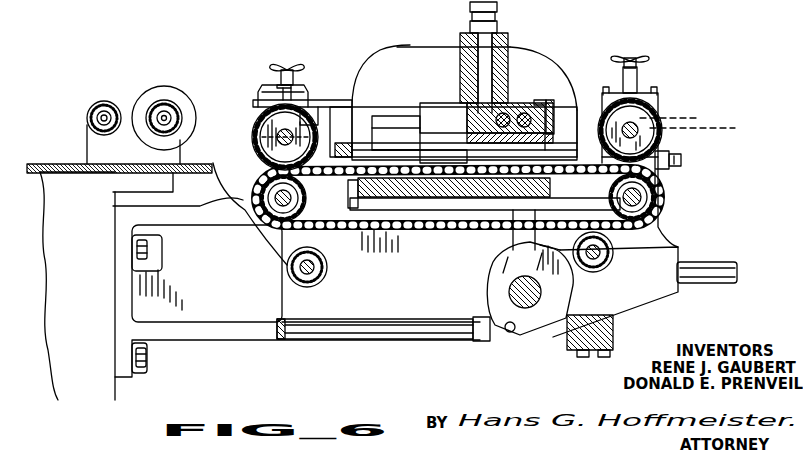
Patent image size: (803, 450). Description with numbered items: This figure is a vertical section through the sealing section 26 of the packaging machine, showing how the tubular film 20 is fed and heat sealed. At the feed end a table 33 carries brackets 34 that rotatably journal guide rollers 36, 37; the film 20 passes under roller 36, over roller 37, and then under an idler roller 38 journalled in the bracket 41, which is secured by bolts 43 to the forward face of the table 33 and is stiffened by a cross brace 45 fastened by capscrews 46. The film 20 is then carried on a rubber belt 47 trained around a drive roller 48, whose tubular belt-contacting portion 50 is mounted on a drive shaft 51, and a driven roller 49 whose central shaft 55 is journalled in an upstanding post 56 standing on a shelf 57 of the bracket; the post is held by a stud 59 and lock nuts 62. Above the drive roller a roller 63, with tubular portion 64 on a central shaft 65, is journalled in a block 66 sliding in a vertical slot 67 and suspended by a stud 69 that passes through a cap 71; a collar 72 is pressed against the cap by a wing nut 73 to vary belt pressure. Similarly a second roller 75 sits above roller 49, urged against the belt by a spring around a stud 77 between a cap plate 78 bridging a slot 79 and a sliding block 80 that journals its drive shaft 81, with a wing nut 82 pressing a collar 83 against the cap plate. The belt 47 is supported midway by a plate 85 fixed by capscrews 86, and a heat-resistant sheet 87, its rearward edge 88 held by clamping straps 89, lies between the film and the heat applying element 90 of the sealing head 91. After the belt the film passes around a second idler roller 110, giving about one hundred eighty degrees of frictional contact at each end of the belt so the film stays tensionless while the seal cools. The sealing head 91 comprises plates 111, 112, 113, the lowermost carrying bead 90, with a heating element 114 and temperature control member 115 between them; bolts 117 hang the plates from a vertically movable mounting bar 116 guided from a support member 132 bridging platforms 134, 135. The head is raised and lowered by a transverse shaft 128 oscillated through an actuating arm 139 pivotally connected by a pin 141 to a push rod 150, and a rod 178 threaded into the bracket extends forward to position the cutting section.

The tubular film 20 is at (82, 130).
The sealing section 26 is at (554, 58).
The table 33 is at (63, 163).
The brackets 34 is at (123, 147).
The guide roller 36 is at (104, 100).
The guide roller 37 is at (172, 105).
The idler roller 38 is at (327, 273).
The bracket 41 is at (224, 292).
The bolts 43 is at (148, 250).
The cross brace 45 is at (604, 326).
The capscrews 46 is at (602, 357).
The rubber belt 47 is at (460, 230).
The drive roller 48 is at (258, 229).
The driven roller 49 is at (658, 200).
The tubular belt-contacting portion 50 is at (306, 198).
The drive shaft 51 is at (316, 197).
The central shaft 55 is at (585, 214).
The post 56 is at (661, 106).
The shelf 57 is at (665, 243).
The stud 59 is at (682, 162).
The lock nuts 62 is at (692, 183).
The roller 63 is at (262, 112).
The tubular belt-contacting portion 64 is at (258, 133).
The central shaft 65 is at (260, 148).
The block 66 is at (300, 116).
The vertical slot 67 is at (333, 90).
The stud 69 is at (287, 66).
The cap 71 is at (265, 90).
The collar 72 is at (264, 73).
The wing nut 73 is at (298, 67).
The second roller 75 is at (662, 139).
The stud 77 is at (630, 56).
The cap plate 78 is at (612, 94).
The slot 79 is at (680, 121).
The sliding block 80 is at (703, 129).
The drive shaft 81 is at (548, 107).
The wing nut 82 is at (650, 61).
The collar 83 is at (640, 76).
The plate 85 is at (482, 188).
The capscrews 86 is at (383, 156).
The sheet 87 is at (462, 144).
The rearward edge 88 is at (350, 114).
The clamping straps 89 is at (366, 126).
The heat applying element 90 is at (553, 145).
The sealing head 91 is at (460, 52).
The second idler roller 110 is at (656, 250).
The plate 111 is at (440, 102).
The plate 112 is at (413, 110).
The lowermost plate 113 is at (436, 150).
The heating element 114 is at (520, 112).
The temperature control member 115 is at (550, 94).
The mounting bar 116 is at (500, 60).
The bolts 117 is at (472, 46).
The transverse shaft 128 is at (513, 290).
The support member 132 is at (412, 55).
The platform 134 is at (340, 100).
The platform 135 is at (577, 100).
The actuating arm 139 is at (497, 302).
The pin 141 is at (510, 333).
The push rod 150 is at (396, 336).
The rod 178 is at (716, 279).